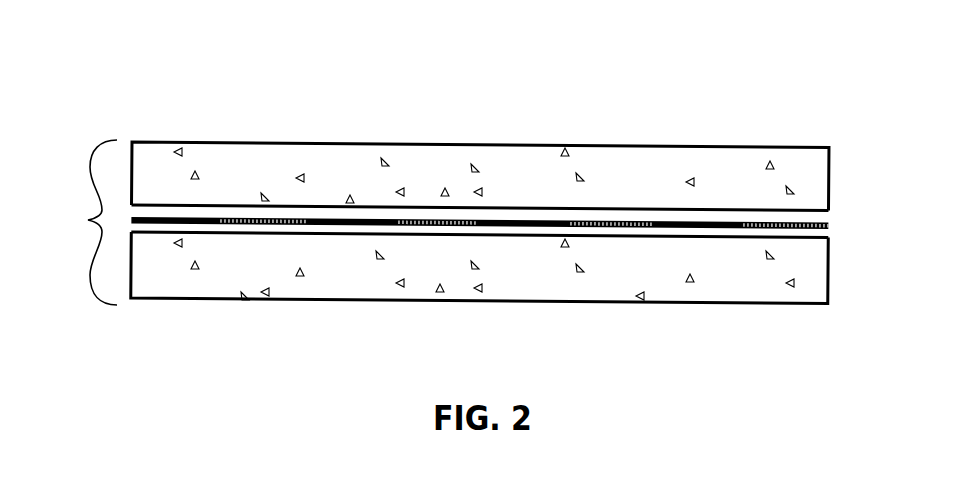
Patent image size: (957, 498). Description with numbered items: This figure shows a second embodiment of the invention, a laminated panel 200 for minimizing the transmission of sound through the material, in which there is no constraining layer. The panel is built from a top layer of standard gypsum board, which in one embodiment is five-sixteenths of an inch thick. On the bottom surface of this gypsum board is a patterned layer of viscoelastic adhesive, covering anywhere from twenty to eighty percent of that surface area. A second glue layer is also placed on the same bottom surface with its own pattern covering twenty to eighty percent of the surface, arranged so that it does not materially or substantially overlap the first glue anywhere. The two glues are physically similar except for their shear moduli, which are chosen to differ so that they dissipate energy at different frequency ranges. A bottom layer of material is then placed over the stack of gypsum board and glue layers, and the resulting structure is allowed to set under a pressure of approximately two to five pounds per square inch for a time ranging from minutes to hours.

The laminated panel 200 is at (75, 222).